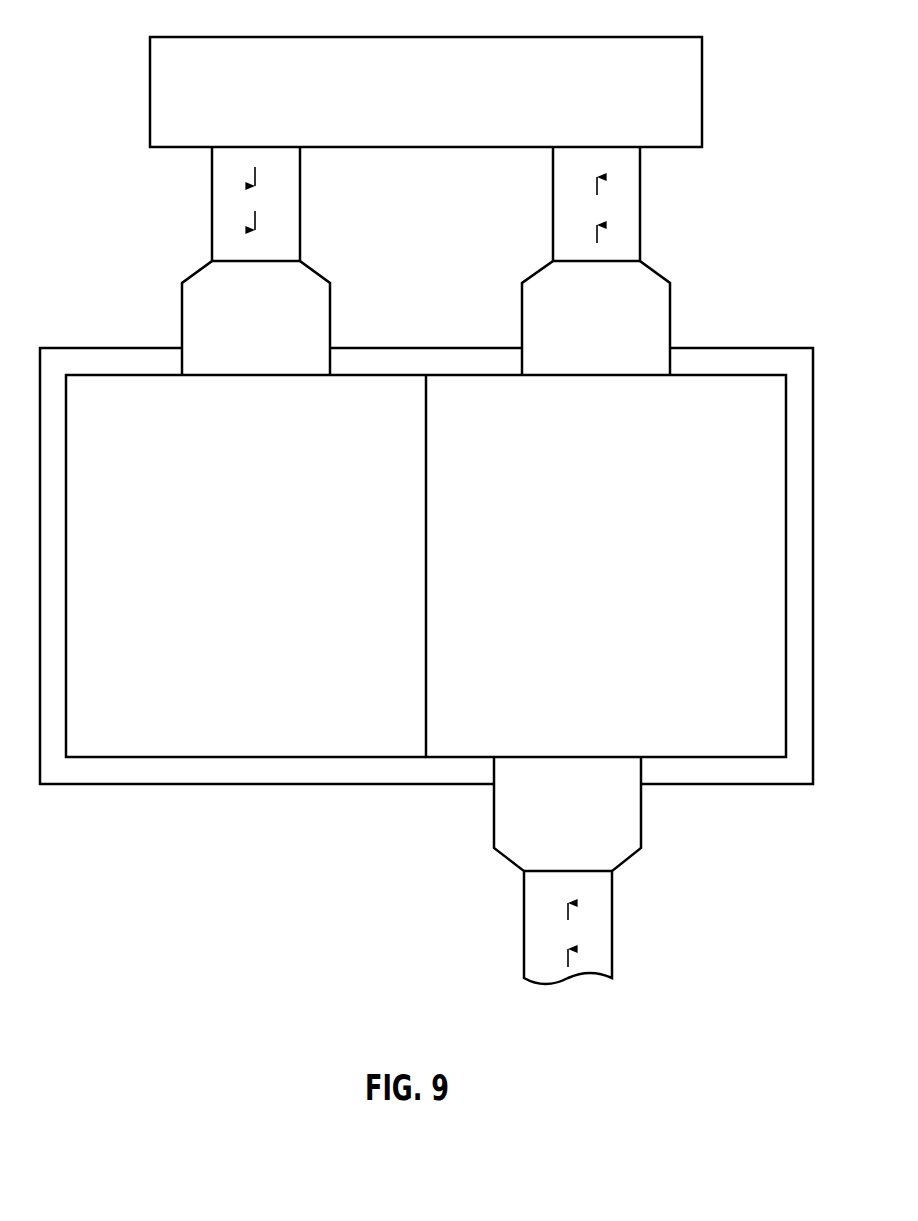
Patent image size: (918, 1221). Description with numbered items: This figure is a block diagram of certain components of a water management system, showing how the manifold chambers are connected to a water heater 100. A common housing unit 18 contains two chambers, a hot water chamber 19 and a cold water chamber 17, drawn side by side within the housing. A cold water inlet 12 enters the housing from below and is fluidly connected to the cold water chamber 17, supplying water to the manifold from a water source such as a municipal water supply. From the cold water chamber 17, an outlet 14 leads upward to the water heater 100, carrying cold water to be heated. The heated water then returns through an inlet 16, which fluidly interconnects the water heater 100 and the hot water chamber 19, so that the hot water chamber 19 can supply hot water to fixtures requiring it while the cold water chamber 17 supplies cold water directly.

The water heater 100 is at (203, 37).
The inlet 16 is at (212, 205).
The outlet 14 is at (640, 205).
The housing unit 18 is at (86, 348).
The hot water chamber 19 is at (220, 733).
The cold water chamber 17 is at (710, 733).
The cold water inlet 12 is at (612, 927).